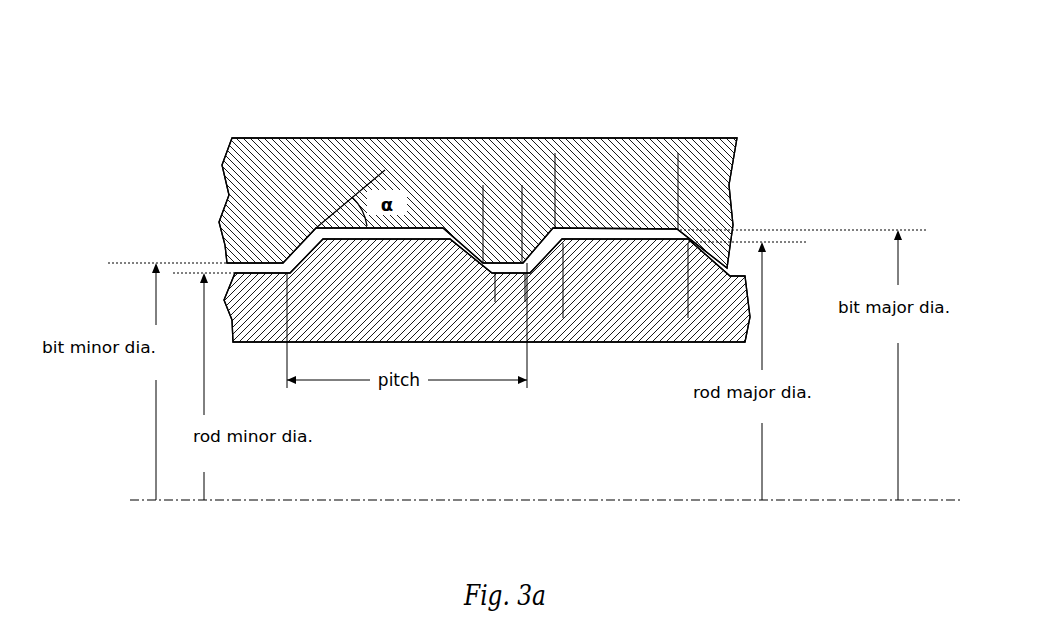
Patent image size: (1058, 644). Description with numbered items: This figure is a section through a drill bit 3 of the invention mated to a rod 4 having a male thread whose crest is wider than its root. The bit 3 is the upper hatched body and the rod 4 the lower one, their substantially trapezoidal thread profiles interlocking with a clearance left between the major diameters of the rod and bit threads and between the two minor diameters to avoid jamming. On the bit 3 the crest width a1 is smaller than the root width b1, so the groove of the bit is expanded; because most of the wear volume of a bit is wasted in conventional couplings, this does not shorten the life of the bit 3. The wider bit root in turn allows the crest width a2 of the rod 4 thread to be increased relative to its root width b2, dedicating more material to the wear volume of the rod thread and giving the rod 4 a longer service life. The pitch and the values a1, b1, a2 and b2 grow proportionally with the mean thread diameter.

The bit 3 is at (717, 138).
The drill rod (threaded spigot) in section 4 is at (605, 342).
The crest width a1 is at (483, 198).
The root width b1 is at (555, 195).
The crest width a2 is at (563, 287).
The root width b2 is at (525, 287).